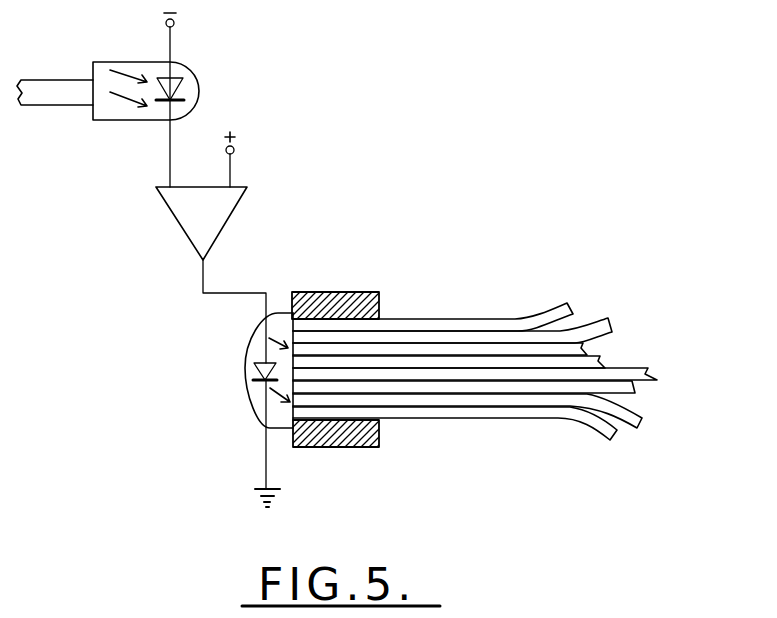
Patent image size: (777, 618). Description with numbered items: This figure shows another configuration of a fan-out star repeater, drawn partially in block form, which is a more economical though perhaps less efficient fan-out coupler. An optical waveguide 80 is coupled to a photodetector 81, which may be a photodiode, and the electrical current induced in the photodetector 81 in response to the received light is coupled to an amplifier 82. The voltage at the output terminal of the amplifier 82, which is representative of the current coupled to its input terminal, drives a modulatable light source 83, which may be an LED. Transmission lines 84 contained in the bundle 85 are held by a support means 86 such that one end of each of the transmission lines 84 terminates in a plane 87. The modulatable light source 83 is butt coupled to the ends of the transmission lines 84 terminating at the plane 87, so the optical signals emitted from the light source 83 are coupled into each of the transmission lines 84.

The optical waveguide 80 is at (41, 79).
The photodetector 81 is at (199, 78).
The amplifier 82 is at (185, 234).
The modulatable light source 83 is at (252, 350).
The transmission lines 84 is at (567, 305).
The bundle 85 is at (441, 437).
The support means 86 is at (333, 291).
The plane 87 is at (292, 410).